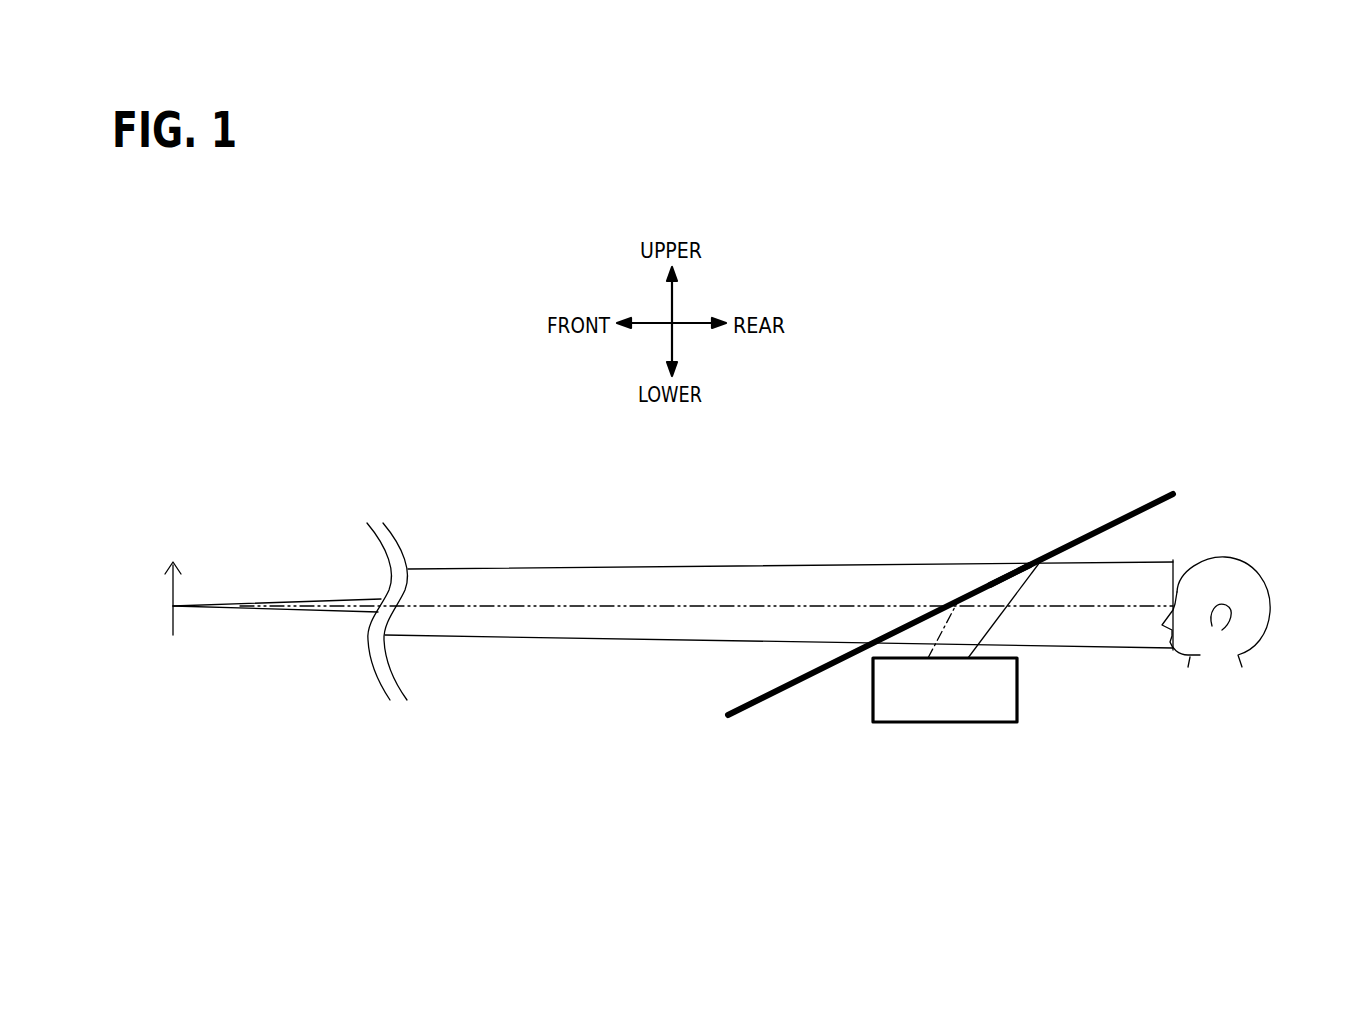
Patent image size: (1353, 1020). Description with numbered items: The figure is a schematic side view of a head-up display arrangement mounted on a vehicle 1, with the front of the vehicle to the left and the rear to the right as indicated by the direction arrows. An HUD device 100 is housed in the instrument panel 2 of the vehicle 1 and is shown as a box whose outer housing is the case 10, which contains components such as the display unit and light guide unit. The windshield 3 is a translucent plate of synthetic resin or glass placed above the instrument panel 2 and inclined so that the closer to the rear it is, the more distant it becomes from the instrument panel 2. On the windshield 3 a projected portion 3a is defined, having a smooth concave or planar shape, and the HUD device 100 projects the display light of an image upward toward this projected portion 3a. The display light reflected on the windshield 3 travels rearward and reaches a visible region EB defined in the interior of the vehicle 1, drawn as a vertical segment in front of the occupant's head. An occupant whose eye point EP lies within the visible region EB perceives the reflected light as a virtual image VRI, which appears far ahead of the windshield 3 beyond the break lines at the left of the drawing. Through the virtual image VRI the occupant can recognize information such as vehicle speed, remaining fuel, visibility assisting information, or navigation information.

The vehicle 1 is at (887, 427).
The instrument panel 2 is at (1043, 675).
The windshield 3 is at (1112, 519).
The projected portion 3a is at (1012, 582).
The case 10 is at (1017, 705).
The HUD device 100 is at (871, 707).
The virtual image VRI is at (173, 590).
The visible region EB is at (1177, 572).
The eye point EP is at (1182, 604).